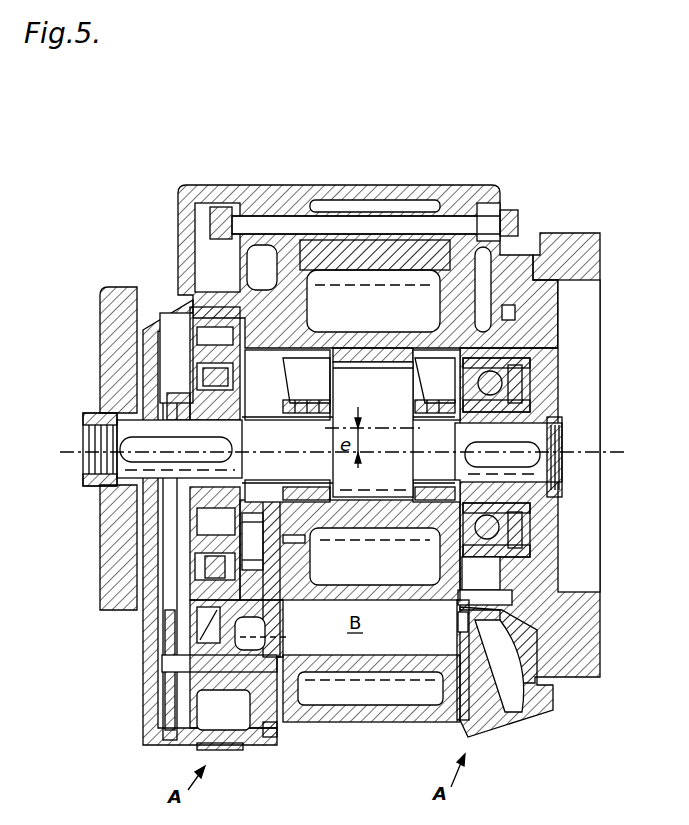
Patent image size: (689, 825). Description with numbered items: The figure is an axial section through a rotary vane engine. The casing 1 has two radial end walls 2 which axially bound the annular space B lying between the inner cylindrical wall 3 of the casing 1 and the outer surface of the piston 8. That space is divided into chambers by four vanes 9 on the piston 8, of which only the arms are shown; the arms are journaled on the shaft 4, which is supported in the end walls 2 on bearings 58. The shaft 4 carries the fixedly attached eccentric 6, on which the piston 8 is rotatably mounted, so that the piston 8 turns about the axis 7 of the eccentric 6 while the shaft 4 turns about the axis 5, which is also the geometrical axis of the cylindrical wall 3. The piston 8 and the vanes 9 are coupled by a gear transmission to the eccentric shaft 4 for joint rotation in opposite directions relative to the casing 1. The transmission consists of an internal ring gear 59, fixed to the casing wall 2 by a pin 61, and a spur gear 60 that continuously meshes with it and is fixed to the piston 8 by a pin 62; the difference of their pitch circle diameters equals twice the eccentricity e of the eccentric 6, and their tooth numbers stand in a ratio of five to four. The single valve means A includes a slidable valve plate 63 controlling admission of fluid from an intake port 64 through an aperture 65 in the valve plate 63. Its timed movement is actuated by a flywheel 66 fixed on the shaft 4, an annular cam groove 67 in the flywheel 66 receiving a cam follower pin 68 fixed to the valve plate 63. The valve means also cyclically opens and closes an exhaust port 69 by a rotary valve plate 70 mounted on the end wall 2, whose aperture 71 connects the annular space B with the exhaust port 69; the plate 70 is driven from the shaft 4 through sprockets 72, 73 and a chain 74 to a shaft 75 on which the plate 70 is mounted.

The casing 1 is at (362, 192).
The radial end wall 2 is at (228, 192).
The inner cylindrical wall 3 is at (372, 656).
The shaft 4 is at (84, 440).
The axis 5 is at (624, 458).
The eccentric 6 is at (393, 399).
The axis 7 is at (416, 424).
The piston 8 is at (342, 262).
The vane 9 is at (292, 388).
The bearing 58 is at (210, 378).
The internal ring gear 59 is at (350, 550).
The spur gear 60 is at (283, 553).
The pin 61 is at (292, 593).
The pin 62 is at (307, 538).
The slidable valve plate 63 is at (458, 624).
The intake port 64 is at (512, 714).
The aperture 65 is at (448, 660).
The flywheel 66 is at (596, 668).
The annular cam groove 67 is at (515, 311).
The cam follower pin 68 is at (512, 594).
The exhaust port 69 is at (217, 752).
The rotary valve plate 70 is at (277, 731).
The aperture 71 is at (290, 638).
The sprocket 72 is at (174, 396).
The sprocket 73 is at (143, 702).
The chain 74 is at (139, 609).
The shaft 75 is at (162, 670).